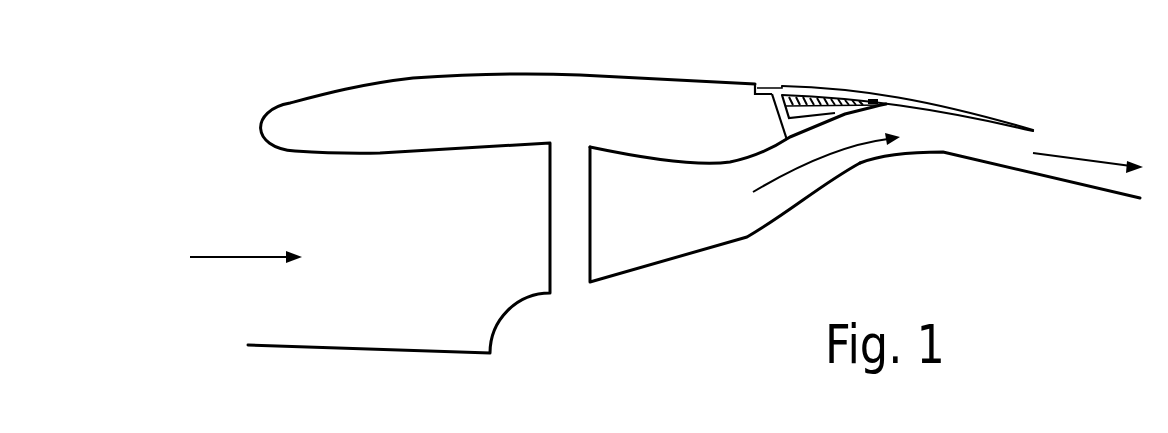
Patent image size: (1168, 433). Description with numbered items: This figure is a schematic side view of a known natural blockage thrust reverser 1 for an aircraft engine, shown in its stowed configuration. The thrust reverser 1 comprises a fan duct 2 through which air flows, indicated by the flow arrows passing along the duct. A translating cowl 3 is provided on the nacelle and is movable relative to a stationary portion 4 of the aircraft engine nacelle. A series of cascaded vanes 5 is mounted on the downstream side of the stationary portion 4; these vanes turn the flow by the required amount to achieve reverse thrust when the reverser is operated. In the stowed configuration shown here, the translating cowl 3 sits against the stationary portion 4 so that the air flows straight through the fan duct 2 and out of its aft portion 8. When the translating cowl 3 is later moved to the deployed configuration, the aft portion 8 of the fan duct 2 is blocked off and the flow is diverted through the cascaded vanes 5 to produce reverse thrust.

The thrust reverser 1 is at (666, 176).
The fan duct 2 is at (683, 220).
The translating cowl 3 is at (920, 98).
The stationary portion 4 is at (688, 120).
The cascaded vanes 5 is at (813, 97).
The aft portion 8 is at (978, 143).